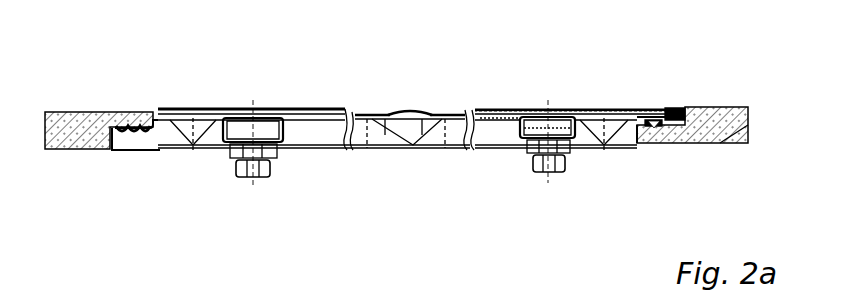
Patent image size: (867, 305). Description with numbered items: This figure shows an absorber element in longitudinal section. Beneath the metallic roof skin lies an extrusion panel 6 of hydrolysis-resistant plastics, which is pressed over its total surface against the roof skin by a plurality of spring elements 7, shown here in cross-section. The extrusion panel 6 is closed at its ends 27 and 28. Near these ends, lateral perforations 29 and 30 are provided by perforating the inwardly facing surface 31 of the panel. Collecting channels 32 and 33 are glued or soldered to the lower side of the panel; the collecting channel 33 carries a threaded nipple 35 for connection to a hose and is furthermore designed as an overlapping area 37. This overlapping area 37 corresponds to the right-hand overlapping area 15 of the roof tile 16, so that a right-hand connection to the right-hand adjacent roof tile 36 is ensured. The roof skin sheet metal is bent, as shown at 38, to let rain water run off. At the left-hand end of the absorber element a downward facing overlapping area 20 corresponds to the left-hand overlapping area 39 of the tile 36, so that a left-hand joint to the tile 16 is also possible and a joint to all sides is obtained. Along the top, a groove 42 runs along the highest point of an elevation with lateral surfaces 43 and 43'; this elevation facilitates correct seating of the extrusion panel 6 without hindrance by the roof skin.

The extrusion panel 6 is at (365, 122).
The spring elements 7 is at (399, 128).
The right-hand overlapping area 15 is at (112, 125).
The roof tile 16 is at (76, 111).
The downward facing overlapping area 20 is at (148, 150).
The end 27 is at (185, 115).
The end 28 is at (661, 118).
The lateral perforation 29 is at (256, 118).
The lateral perforation 30 is at (554, 118).
The inwardly facing surface 31 is at (454, 122).
The collecting channel 32 is at (271, 128).
The collecting channel 33 is at (537, 120).
The threaded nipple 35 is at (542, 167).
The right-hand adjacent roof tile 36 is at (733, 136).
The overlapping area 37 is at (670, 110).
The bend of roof skin sheet metal 38 is at (680, 115).
The left-hand overlapping area 39 is at (672, 144).
The groove 42 is at (412, 110).
The lateral surface 43 is at (404, 89).
The lateral surface 43' is at (446, 87).